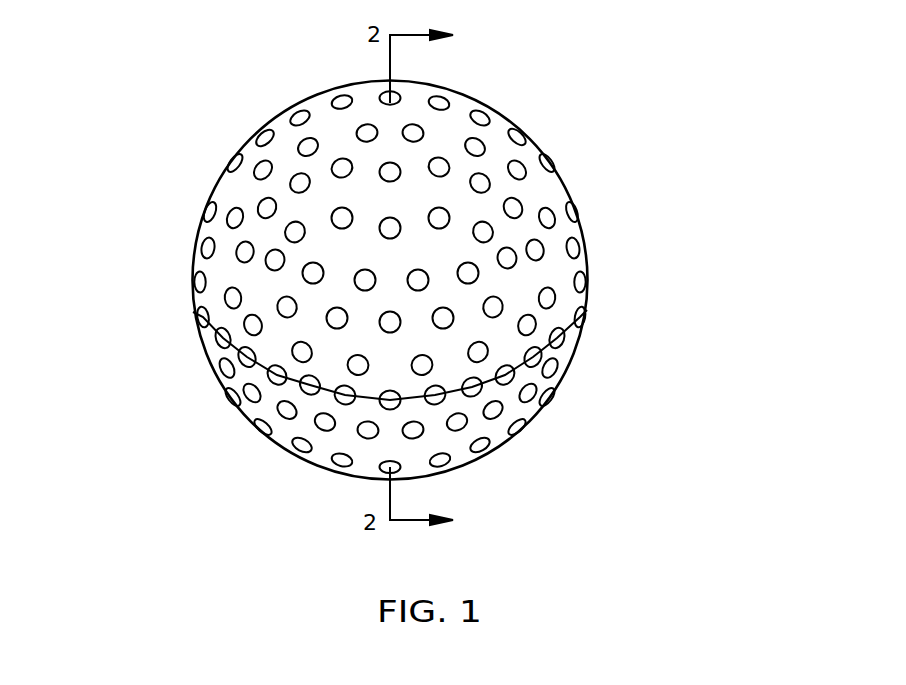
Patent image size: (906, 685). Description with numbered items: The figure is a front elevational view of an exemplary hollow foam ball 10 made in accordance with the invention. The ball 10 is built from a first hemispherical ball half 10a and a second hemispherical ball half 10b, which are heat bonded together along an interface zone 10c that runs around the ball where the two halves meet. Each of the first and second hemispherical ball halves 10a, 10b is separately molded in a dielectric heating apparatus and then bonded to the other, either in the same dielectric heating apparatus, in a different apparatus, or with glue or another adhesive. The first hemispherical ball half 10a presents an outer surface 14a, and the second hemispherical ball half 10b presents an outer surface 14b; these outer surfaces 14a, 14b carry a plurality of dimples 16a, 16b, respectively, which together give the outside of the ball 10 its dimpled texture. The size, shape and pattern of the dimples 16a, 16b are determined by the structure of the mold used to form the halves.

The hollow foam ball 10 is at (618, 147).
The first hemispherical ball half 10a is at (278, 112).
The second hemispherical ball half 10b is at (273, 443).
The interface zone 10c is at (520, 365).
The outer surface of first hemispherical ball half 14a is at (498, 128).
The outer surface of second hemispherical ball half 14b is at (500, 430).
The dimples of first hemispherical ball half 16a is at (260, 173).
The dimples of second hemispherical ball half 16b is at (227, 370).